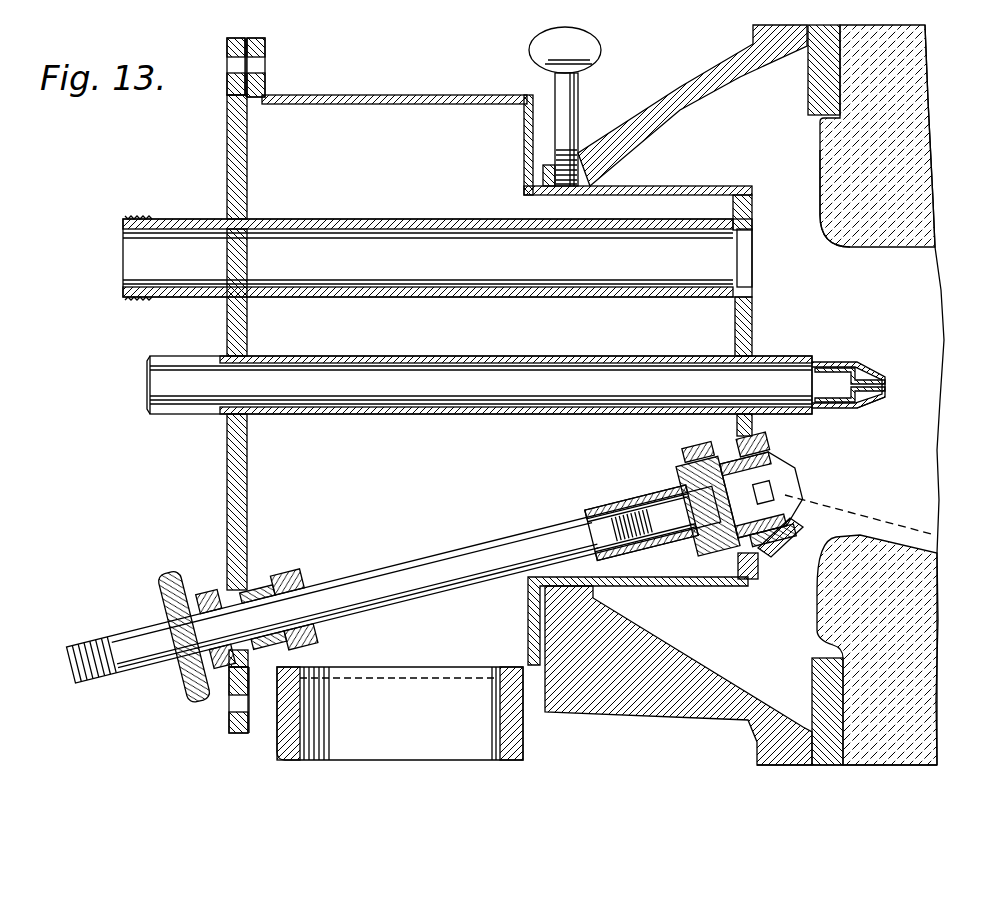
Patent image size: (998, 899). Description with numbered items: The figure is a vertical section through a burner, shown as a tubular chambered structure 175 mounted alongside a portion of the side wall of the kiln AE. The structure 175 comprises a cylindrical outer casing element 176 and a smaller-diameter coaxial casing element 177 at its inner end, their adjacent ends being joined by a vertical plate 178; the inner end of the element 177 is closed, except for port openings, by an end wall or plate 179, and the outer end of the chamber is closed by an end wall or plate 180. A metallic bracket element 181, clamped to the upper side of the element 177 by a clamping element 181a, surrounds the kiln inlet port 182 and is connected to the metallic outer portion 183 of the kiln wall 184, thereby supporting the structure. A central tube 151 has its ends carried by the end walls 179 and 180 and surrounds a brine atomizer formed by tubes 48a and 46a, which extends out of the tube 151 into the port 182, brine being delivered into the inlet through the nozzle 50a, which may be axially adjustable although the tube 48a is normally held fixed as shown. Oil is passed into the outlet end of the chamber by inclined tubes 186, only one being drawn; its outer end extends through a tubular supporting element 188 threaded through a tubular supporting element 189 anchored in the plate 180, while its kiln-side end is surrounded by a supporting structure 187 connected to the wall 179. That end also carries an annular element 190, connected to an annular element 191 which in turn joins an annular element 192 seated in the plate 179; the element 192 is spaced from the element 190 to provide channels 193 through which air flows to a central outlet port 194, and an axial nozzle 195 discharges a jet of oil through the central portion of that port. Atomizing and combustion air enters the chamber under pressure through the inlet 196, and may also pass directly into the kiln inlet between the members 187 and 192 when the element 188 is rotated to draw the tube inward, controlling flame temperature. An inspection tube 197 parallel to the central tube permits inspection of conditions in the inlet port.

The tubular chambered structure 175 is at (499, 116).
The cylindrical outer casing element 176 is at (345, 95).
The coaxial casing element 177 is at (645, 186).
The vertical plate 178 is at (524, 143).
The end wall or plate 179 is at (752, 330).
The end wall or plate 180 is at (228, 155).
The metallic bracket element 181 is at (697, 88).
The clamping element 181a is at (575, 92).
The kiln inlet port 182 is at (893, 283).
The metallic outer portion of the kiln wall 183 is at (812, 78).
The kiln wall 184 is at (872, 78).
The kiln AE is at (822, 148).
The inspection tube 197 is at (410, 298).
The central tube 151 is at (663, 356).
The brine atomizer tube 48a is at (856, 362).
The brine atomizer tube 46a is at (840, 402).
The nozzle 50a is at (880, 403).
The oil tube 186 is at (492, 560).
The supporting structure 187 is at (778, 548).
The tubular supporting element 188 is at (148, 654).
The tubular supporting element 189 is at (217, 600).
The annular element 190 is at (670, 513).
The annular element 191 is at (687, 443).
The annular element 192 is at (784, 443).
The channels 193 is at (796, 483).
The central outlet port 194 is at (816, 489).
The axial nozzle 195 is at (810, 523).
The inlet 196 is at (418, 729).